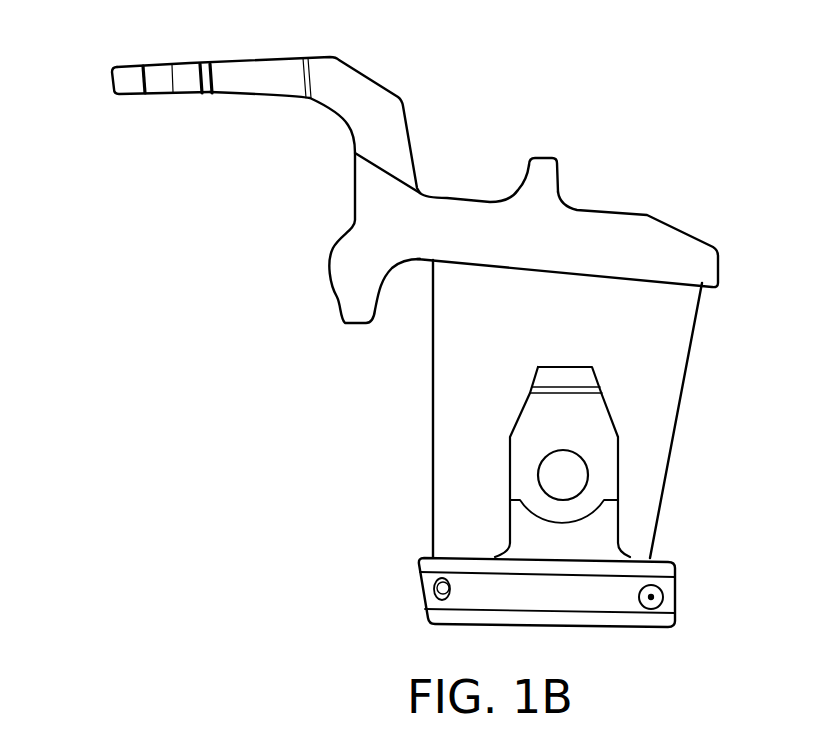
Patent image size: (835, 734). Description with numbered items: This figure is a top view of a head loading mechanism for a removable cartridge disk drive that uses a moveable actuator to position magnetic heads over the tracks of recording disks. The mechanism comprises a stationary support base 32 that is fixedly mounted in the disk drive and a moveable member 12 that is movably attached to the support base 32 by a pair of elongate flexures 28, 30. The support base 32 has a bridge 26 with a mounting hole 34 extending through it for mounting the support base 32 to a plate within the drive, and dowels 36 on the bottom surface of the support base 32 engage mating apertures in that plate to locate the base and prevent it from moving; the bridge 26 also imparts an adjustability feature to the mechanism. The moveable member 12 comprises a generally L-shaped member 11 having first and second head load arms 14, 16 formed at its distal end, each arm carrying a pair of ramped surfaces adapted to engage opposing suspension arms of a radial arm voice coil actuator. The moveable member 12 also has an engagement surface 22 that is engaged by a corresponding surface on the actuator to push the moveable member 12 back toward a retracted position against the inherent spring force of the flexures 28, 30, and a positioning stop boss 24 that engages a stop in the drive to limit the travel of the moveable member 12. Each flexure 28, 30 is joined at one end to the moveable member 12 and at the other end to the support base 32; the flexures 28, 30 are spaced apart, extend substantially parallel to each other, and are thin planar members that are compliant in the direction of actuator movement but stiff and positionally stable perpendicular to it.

The L-shaped member 11 is at (250, 108).
The moveable member 12 is at (597, 195).
The first head load arm 14 is at (121, 58).
The second head load arm 16 is at (153, 72).
The engagement surface 22 is at (328, 262).
The positioning stop boss 24 is at (543, 162).
The bridge 26 is at (580, 412).
The flexure 28 is at (697, 322).
The flexure 30 is at (435, 308).
The support base 32 is at (677, 580).
The mounting hole 34 is at (563, 475).
The dowel 36 is at (432, 590).